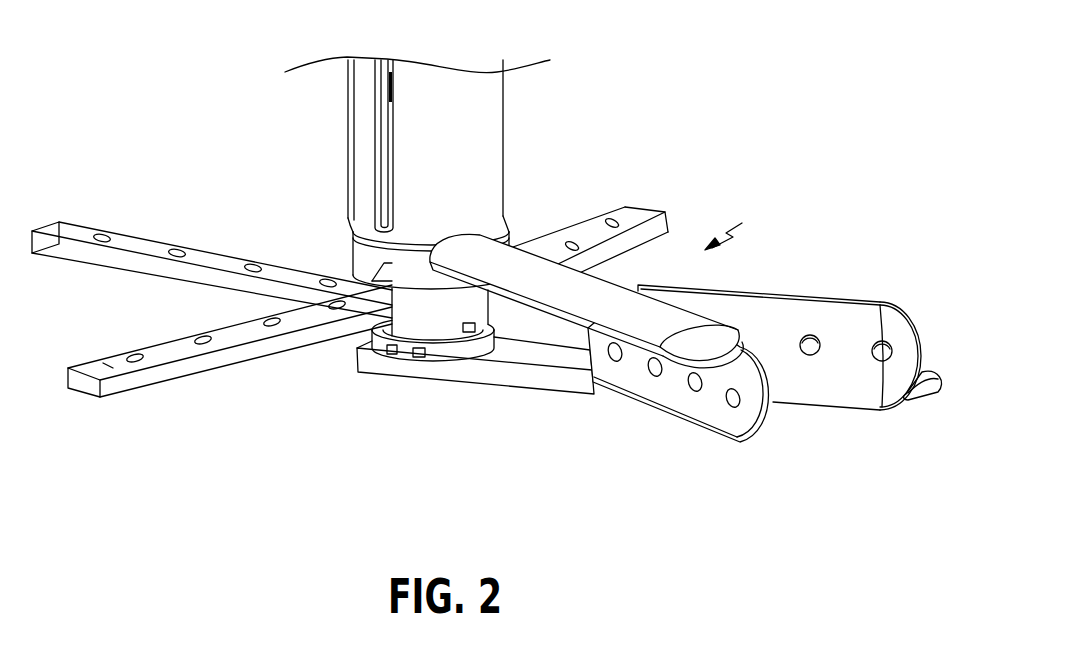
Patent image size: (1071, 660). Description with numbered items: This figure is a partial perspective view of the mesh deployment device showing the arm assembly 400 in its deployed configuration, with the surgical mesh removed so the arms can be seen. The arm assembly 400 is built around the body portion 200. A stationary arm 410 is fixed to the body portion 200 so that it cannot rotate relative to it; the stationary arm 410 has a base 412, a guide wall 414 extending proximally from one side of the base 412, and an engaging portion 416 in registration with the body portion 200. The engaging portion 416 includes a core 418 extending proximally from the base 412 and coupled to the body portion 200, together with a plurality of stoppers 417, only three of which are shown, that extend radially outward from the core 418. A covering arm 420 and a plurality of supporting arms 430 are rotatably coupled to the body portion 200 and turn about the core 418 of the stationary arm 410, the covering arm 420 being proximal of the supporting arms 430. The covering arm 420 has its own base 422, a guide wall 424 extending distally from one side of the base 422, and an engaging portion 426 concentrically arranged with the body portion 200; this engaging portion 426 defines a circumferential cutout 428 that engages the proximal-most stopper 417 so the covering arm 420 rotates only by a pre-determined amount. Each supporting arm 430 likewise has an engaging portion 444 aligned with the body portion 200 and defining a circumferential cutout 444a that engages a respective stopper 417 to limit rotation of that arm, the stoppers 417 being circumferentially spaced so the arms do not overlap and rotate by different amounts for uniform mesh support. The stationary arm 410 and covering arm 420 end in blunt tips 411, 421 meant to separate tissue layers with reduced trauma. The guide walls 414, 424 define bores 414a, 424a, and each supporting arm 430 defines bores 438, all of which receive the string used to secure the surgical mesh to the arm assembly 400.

The body portion 200 is at (488, 93).
The arm assembly 400 is at (741, 223).
The stationary arm 410 is at (685, 298).
The blunt tip 411 is at (940, 380).
The base 412 is at (940, 392).
The guide wall 414 is at (906, 400).
The bores 414a is at (810, 336).
The engaging portion 416 is at (357, 366).
The stoppers 417 is at (428, 347).
The core 418 is at (428, 330).
The covering arm 420 is at (603, 287).
The blunt tip 421 is at (762, 422).
The base 422 is at (643, 337).
The guide wall 424 is at (723, 420).
The bores 424a is at (695, 390).
The engaging portion 426 is at (372, 272).
The circumferential cutout 428 is at (367, 288).
The supporting arms 430 is at (148, 245).
The bores 438 is at (107, 236).
The engaging portions 444 is at (497, 347).
The circumferential cutout 444a is at (467, 330).